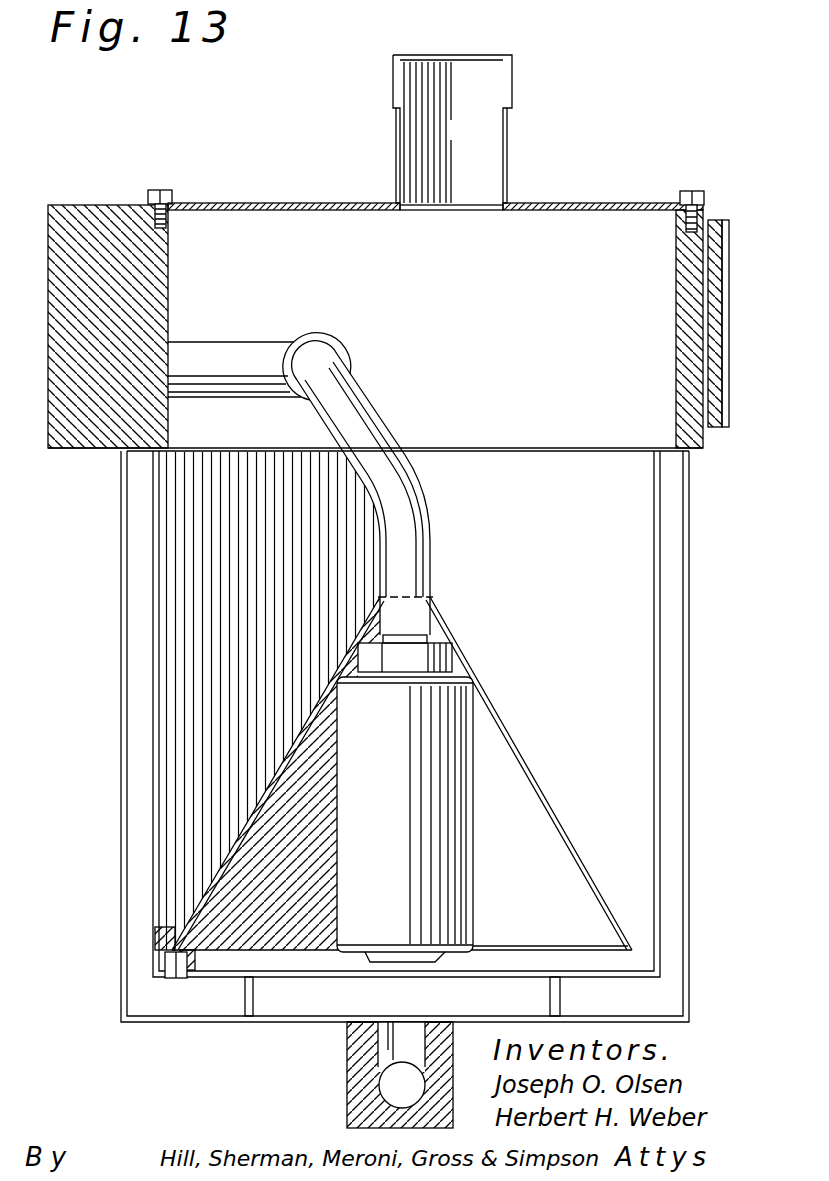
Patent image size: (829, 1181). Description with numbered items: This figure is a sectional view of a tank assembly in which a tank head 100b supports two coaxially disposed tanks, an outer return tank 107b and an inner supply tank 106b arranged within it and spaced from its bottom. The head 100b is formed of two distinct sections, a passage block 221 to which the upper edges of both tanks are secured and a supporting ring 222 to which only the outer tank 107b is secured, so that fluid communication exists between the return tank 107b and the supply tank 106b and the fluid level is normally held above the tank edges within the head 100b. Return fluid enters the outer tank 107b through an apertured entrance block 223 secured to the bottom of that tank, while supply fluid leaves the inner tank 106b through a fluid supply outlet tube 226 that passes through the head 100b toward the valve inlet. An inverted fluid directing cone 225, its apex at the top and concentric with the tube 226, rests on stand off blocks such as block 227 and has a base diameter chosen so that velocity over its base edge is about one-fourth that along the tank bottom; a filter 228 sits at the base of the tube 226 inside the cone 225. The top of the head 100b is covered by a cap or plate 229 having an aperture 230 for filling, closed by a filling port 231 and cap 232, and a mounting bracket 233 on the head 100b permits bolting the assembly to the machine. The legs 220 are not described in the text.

The tank head 100b is at (91, 434).
The supply tank 106b is at (657, 778).
The return tank 107b is at (119, 917).
The support legs 220 is at (255, 993).
The passage block 221 is at (95, 222).
The supporting ring 222 is at (700, 437).
The entrance block 223 is at (360, 1065).
The fluid directing cone 225 is at (520, 767).
The fluid supply outlet tube 226 is at (417, 538).
The stand off block 227 is at (160, 971).
The filter 228 is at (395, 848).
The cap or plate 229 is at (580, 203).
The aperture 230 is at (468, 207).
The filling port 231 is at (511, 150).
The cap 232 is at (477, 58).
The mounting bracket 233 is at (718, 327).